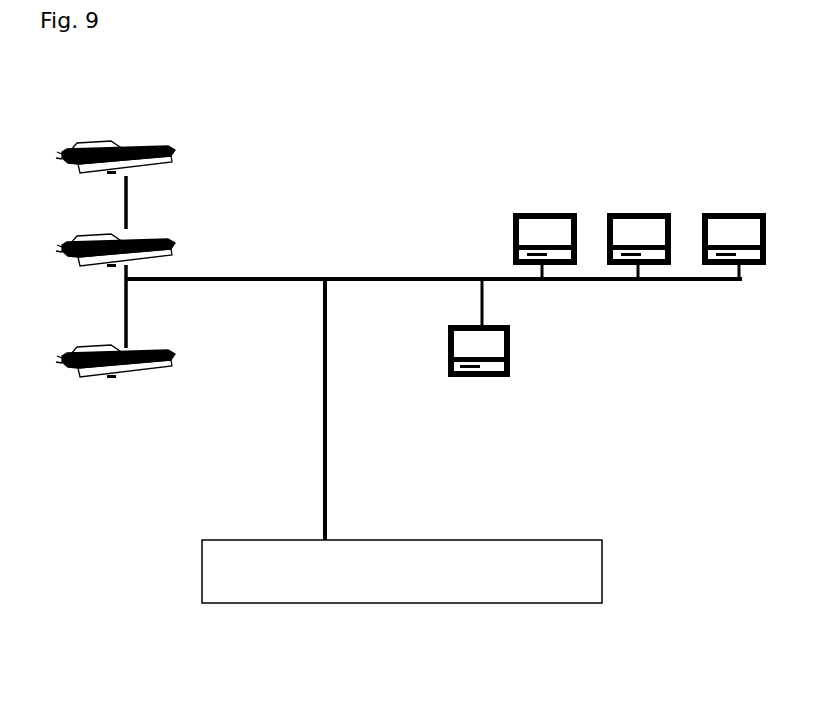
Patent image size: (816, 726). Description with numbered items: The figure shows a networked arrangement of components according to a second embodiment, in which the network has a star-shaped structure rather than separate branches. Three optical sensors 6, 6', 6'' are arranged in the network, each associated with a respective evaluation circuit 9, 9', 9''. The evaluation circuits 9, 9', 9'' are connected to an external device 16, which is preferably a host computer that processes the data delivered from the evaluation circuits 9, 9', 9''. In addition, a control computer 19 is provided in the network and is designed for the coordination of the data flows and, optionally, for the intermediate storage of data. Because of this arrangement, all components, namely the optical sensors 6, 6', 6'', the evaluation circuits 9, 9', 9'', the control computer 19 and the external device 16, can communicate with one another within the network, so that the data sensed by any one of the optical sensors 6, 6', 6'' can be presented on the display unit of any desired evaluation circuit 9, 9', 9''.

The optical sensor 6 is at (115, 141).
The optical sensor 6' is at (115, 234).
The optical sensor 6'' is at (115, 346).
The evaluation circuit 9 is at (545, 210).
The evaluation circuit 9' is at (639, 210).
The evaluation circuit 9'' is at (731, 210).
The control computer 19 is at (516, 351).
The external device 16 is at (402, 607).